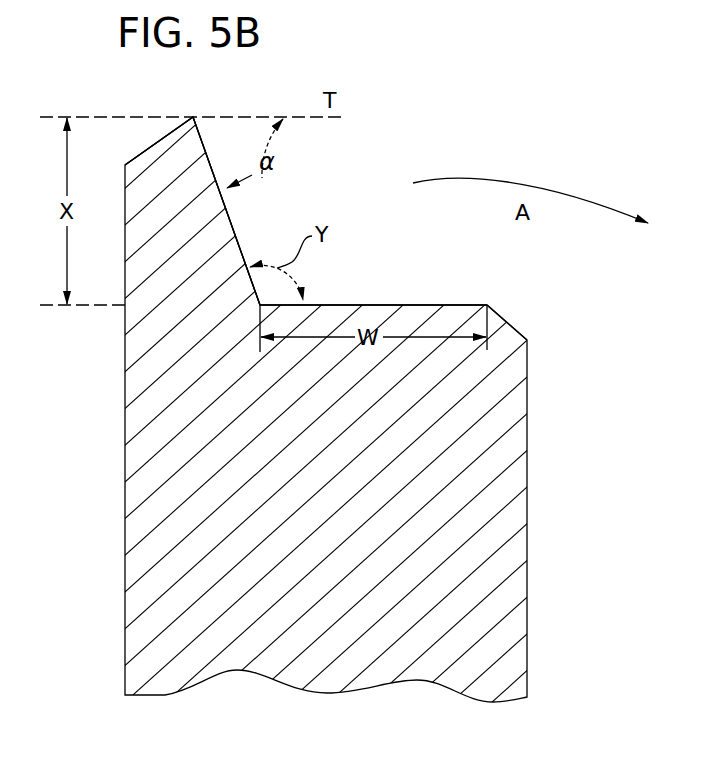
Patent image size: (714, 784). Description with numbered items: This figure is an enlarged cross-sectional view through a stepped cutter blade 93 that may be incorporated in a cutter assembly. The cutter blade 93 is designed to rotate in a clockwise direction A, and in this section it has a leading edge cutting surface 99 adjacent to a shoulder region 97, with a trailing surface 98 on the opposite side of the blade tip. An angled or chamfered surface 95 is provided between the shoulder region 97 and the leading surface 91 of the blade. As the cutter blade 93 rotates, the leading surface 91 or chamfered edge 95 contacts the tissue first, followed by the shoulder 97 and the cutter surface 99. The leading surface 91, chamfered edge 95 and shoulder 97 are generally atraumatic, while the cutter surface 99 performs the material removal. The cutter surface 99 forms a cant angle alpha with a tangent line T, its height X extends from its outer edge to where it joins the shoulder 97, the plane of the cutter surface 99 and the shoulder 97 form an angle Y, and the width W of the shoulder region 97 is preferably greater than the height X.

The leading surface 91 is at (527, 522).
The cutter blade 93 is at (378, 134).
The chamfered surface 95 is at (510, 327).
The shoulder region 97 is at (420, 307).
The trailing surface 98 is at (147, 148).
The leading edge cutting surface 99 is at (205, 143).